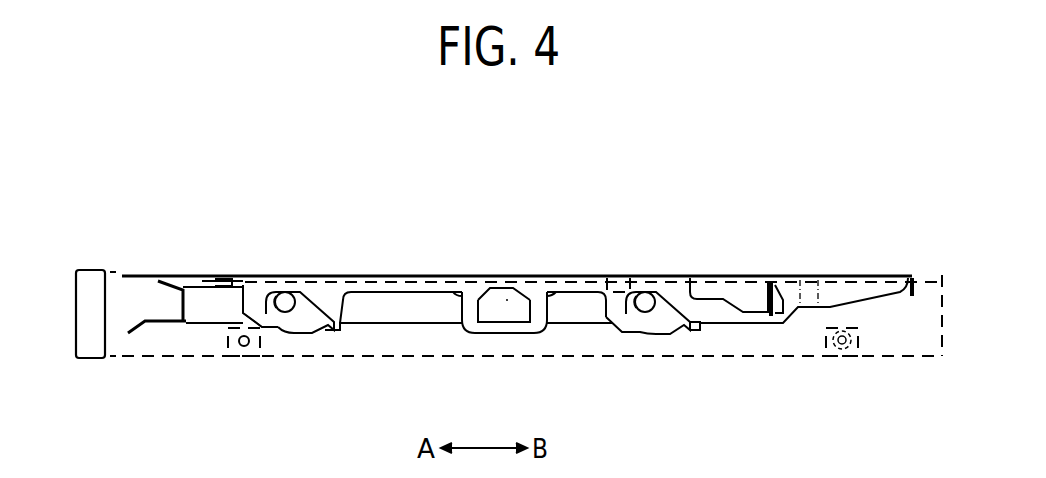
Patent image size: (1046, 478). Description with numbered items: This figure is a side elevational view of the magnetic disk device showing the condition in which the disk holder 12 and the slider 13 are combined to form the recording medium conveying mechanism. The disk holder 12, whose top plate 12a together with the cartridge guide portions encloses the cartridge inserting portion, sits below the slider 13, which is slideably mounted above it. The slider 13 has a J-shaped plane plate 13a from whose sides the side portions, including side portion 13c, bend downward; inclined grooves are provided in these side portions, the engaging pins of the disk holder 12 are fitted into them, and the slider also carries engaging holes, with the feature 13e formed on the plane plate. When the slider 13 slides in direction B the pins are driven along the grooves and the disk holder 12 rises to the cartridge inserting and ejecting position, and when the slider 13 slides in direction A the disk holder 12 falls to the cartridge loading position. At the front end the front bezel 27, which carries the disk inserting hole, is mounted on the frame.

The disk holder 12 is at (417, 310).
The top plate 12a is at (210, 290).
The slider 13 is at (495, 277).
The plane plate 13a is at (358, 290).
The side portion 13c is at (720, 312).
The projection 13e is at (528, 337).
The front bezel 27 is at (93, 288).